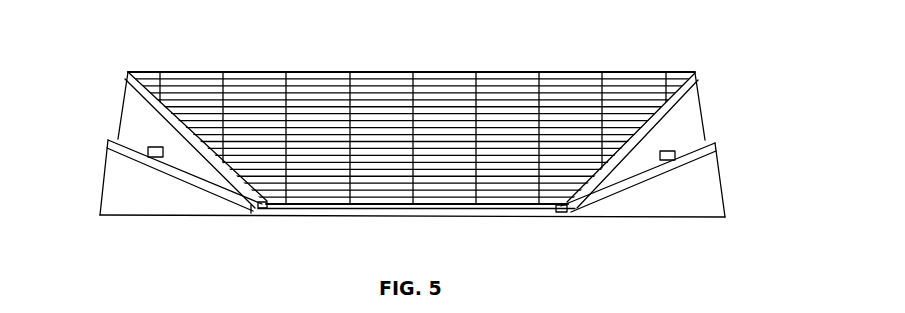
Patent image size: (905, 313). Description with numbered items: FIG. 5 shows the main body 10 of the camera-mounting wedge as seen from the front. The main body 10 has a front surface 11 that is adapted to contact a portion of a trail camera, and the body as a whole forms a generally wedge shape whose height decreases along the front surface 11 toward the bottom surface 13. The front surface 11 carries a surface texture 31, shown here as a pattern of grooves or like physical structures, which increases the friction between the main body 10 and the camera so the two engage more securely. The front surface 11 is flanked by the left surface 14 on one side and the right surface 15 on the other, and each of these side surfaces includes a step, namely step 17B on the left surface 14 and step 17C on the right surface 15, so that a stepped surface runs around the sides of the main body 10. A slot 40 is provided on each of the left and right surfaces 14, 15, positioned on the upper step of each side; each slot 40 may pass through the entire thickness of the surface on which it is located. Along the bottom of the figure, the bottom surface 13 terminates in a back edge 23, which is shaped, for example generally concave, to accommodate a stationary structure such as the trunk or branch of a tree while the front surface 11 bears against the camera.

The main body 10 is at (762, 135).
The front surface 11 is at (410, 114).
The bottom surface 13 is at (292, 215).
The left surface 14 is at (134, 123).
The right surface 15 is at (687, 118).
The step 17B is at (132, 155).
The step 17C is at (690, 157).
The back edge 23 is at (437, 209).
The surface texture 31 is at (503, 97).
The slot 40 is at (155, 152).